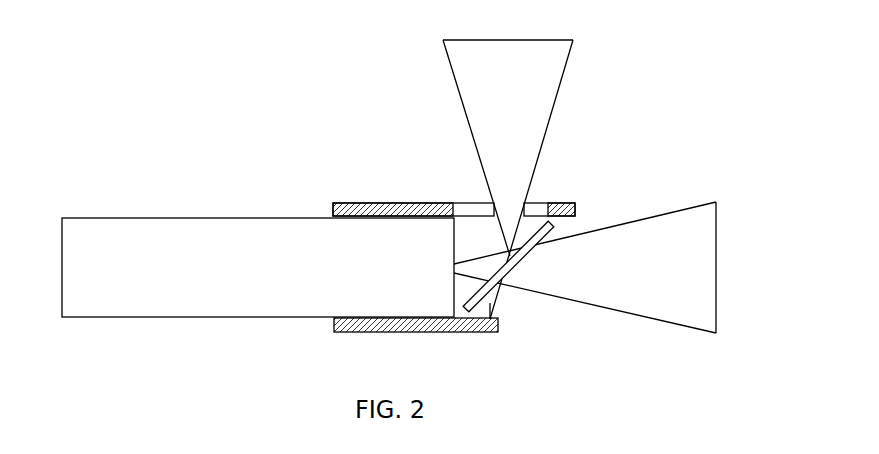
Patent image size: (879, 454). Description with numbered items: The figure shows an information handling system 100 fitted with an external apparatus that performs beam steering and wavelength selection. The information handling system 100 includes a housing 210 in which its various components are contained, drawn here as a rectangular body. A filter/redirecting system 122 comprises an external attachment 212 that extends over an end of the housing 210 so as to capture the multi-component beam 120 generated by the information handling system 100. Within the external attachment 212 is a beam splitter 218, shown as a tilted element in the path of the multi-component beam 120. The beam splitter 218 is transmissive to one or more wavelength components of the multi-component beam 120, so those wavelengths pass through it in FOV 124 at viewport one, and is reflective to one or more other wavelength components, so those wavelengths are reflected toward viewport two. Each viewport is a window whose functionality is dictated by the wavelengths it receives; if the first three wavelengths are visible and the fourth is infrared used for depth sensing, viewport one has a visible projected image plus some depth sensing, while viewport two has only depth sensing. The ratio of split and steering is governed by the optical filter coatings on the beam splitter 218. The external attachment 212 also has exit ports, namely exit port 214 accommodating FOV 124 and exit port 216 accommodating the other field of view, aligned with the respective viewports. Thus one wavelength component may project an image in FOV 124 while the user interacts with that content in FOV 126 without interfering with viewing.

The information handling system 100 is at (97, 45).
The housing 210 is at (105, 218).
The FOV 124 is at (716, 208).
The FOV 126 is at (450, 40).
The multi-component beam 120 is at (454, 264).
The filter/redirecting system 122 is at (437, 180).
The external attachment 212 is at (395, 203).
The exit port 216 is at (461, 188).
The beam splitter 218 is at (488, 326).
The exit port 214 is at (527, 308).